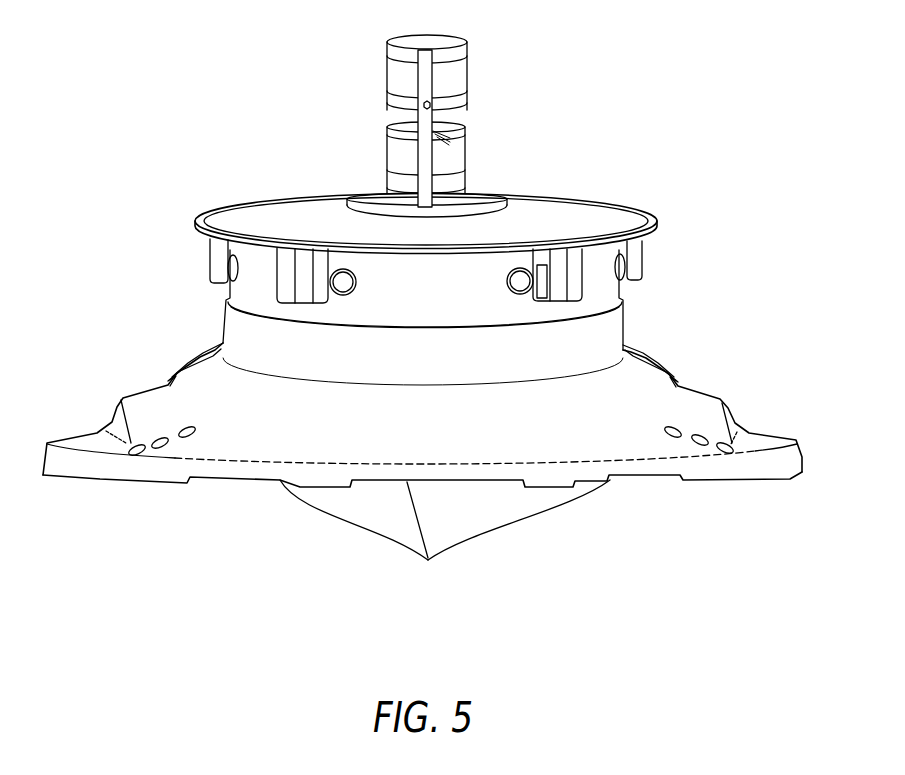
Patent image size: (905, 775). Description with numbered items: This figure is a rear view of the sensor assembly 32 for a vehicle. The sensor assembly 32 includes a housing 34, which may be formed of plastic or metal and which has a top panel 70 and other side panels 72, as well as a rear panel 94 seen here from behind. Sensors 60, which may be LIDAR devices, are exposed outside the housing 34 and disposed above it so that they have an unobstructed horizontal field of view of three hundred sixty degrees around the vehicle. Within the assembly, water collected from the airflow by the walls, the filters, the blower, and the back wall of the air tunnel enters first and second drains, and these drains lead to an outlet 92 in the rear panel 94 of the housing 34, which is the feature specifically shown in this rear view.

The sensor assembly 32 is at (621, 60).
The housing 34 is at (555, 200).
The sensors 60 is at (467, 153).
The top panel 70 is at (295, 197).
The side panels 72 is at (227, 293).
The outlet 92 is at (445, 537).
The rear panel 94 is at (383, 463).